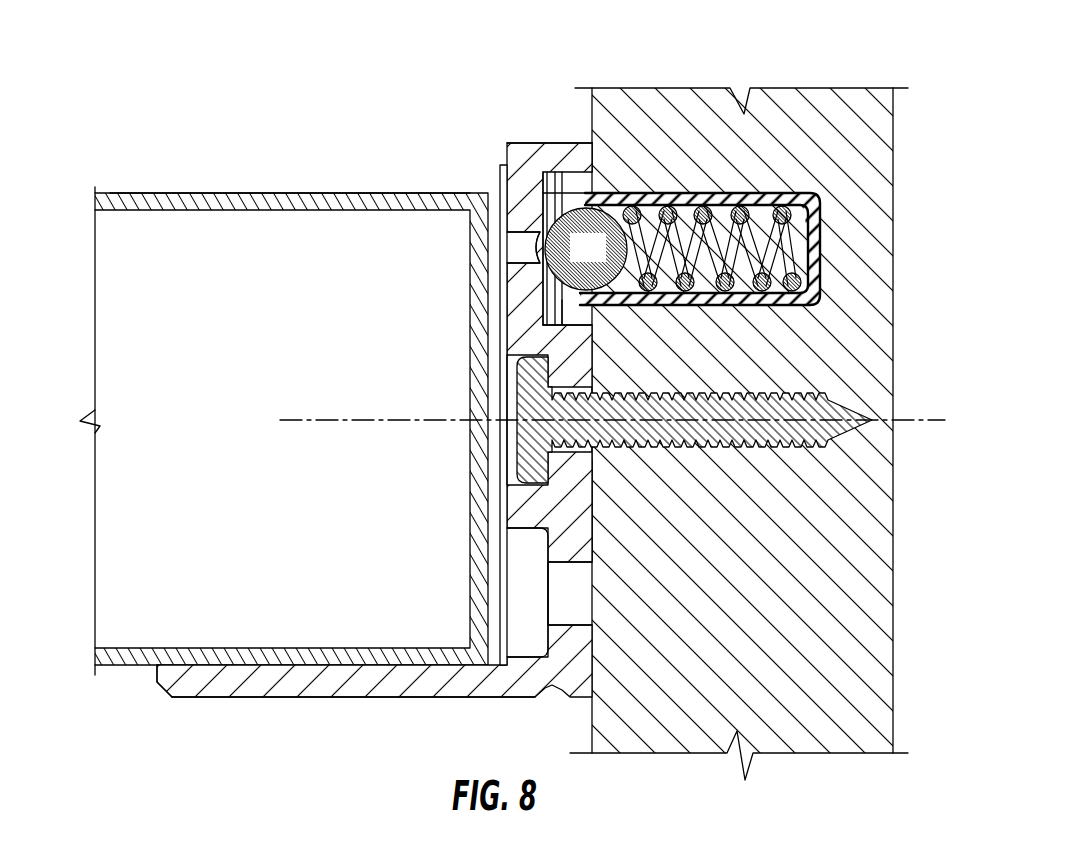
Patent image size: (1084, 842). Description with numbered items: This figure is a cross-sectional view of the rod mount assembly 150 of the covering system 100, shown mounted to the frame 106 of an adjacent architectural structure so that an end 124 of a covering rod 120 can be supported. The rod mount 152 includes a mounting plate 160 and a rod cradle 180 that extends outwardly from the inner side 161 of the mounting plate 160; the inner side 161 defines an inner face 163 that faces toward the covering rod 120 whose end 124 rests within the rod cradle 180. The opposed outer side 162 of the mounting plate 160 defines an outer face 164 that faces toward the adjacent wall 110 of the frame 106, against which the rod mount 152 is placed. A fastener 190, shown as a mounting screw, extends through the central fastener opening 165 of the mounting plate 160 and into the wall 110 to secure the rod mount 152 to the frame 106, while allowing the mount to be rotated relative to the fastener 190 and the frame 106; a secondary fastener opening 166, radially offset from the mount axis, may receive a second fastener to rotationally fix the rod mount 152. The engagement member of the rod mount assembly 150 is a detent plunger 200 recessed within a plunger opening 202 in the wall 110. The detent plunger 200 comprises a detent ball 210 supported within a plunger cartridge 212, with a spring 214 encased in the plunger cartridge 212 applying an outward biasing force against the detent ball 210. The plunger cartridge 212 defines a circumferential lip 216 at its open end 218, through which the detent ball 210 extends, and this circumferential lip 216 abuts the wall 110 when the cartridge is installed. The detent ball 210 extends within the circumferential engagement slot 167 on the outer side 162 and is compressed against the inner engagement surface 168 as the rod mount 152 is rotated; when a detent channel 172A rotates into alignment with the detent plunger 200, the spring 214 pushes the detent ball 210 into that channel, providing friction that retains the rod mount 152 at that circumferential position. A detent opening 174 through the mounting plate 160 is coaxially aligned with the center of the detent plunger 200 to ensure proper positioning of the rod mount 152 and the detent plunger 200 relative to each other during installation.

The door assembly 100 is at (138, 117).
The frame 106 is at (905, 121).
The wall 110 is at (830, 104).
The covering rod 120 is at (193, 310).
The end 124 is at (350, 191).
The rod mount assembly 150 is at (398, 104).
The rod mount 152 is at (448, 702).
The mounting plate 160 is at (525, 140).
The inner side 161 is at (503, 167).
The outer side 162 is at (600, 160).
The inner face 163 is at (505, 510).
The outer face 164 is at (595, 508).
The central fastener opening 165 is at (504, 364).
The secondary fastener opening 166 is at (524, 591).
The circumferential engagement slot 167 is at (548, 323).
The inner engagement surface 168 is at (562, 172).
The detent channel 172A is at (543, 270).
The detent opening 174 is at (522, 247).
The rod cradle 180 is at (196, 684).
The fastener 190 is at (518, 396).
The detent plunger 200 is at (720, 160).
The plunger opening 202 is at (806, 303).
The detent ball 210 is at (603, 262).
The plunger cartridge 212 is at (744, 204).
The spring 214 is at (733, 306).
The circumferential lip 216 is at (550, 312).
The open end 218 is at (580, 201).